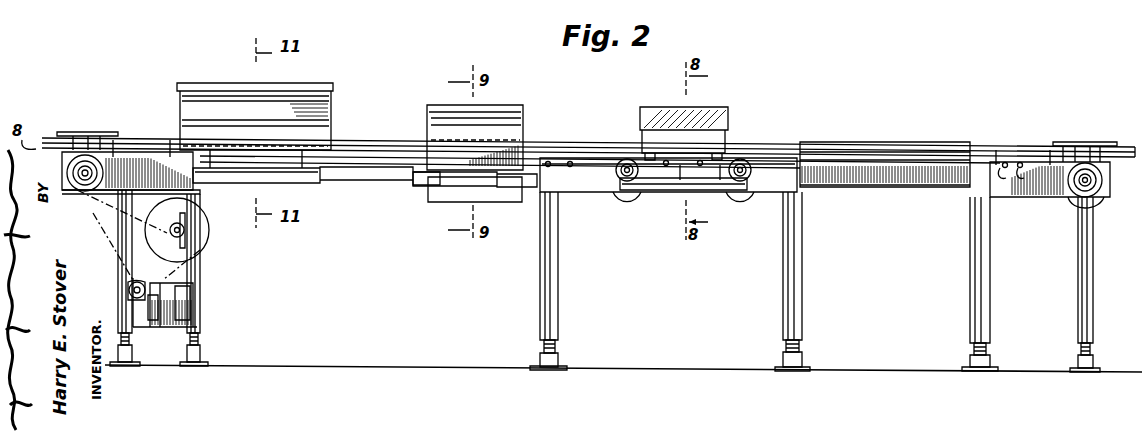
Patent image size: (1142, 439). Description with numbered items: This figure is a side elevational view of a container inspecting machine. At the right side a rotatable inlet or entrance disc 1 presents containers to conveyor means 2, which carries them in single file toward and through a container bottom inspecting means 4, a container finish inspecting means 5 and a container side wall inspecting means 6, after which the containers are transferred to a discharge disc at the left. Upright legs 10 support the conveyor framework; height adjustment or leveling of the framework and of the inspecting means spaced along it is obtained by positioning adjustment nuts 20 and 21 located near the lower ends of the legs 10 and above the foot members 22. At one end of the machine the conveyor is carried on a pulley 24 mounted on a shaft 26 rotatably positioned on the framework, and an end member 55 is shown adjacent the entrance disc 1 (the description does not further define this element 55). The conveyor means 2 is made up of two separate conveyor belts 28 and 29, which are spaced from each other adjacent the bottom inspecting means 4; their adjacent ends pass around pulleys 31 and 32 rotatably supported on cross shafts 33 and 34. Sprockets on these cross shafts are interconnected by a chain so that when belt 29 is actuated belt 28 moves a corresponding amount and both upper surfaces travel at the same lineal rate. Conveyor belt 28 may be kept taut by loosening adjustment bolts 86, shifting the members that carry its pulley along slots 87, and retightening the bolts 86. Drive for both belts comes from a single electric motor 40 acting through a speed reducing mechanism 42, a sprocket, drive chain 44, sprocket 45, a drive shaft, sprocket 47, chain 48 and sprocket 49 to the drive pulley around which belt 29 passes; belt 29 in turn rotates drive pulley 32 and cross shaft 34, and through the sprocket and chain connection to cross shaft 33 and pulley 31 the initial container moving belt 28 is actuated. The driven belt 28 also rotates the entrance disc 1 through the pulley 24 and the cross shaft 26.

The inlet or entrance disc 1 is at (1116, 161).
The conveyor means 2 is at (343, 142).
The container bottom inspecting means 4 is at (714, 103).
The container finish inspecting means 5 is at (506, 105).
The container side wall inspecting means 6 is at (312, 81).
The upright legs 10 is at (556, 285).
The adjustment nut 20 is at (802, 346).
The adjustment nut 21 is at (803, 355).
The foot members 22 is at (130, 360).
The pulley 24 is at (1100, 197).
The shaft 26 is at (1080, 182).
The conveyor belt 28 is at (901, 150).
The conveyor belt 29 is at (383, 142).
The pulley 31 is at (748, 193).
The pulley 32 is at (628, 193).
The cross shaft 33 is at (762, 172).
The cross shaft 34 is at (613, 187).
The electric motor 40 is at (175, 303).
The speed reducing mechanism 42 is at (128, 300).
The drive chain 44 is at (140, 264).
The sprocket 45 is at (205, 247).
The sprocket 47 is at (186, 233).
The chain 48 is at (105, 218).
The sprocket 49 is at (87, 200).
The end plate 55 is at (1125, 140).
The adjustment bolts 86 is at (1021, 160).
The slots 87 is at (1011, 181).